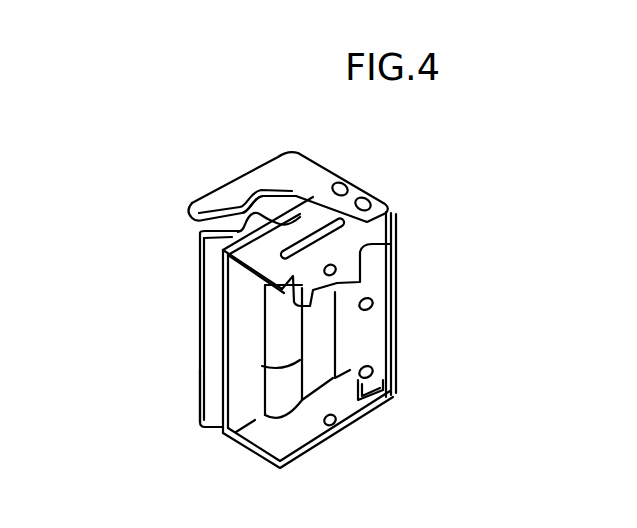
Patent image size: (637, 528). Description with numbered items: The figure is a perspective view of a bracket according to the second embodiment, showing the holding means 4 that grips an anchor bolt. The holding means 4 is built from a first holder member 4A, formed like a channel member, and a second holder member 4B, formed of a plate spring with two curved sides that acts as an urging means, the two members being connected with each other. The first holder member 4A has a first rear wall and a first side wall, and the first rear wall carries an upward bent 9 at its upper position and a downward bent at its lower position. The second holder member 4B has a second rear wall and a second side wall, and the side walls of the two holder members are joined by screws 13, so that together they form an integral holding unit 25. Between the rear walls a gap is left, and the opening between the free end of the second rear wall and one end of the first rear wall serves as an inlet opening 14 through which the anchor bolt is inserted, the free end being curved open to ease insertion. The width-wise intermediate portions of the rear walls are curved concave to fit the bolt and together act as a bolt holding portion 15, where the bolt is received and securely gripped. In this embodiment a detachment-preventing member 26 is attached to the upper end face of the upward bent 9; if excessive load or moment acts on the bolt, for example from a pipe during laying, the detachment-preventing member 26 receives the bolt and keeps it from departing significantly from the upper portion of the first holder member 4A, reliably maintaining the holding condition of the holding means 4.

The holding means 4 is at (100, 262).
The first holder member 4A is at (218, 340).
The second holder member 4B is at (197, 296).
The inlet opening 14 is at (204, 384).
The detachment-preventing member 26 is at (235, 181).
The bolt holding portion 15 is at (269, 214).
The upward bent 9 is at (340, 272).
The integral holding unit 25 is at (398, 302).
The screws 13 is at (372, 312).